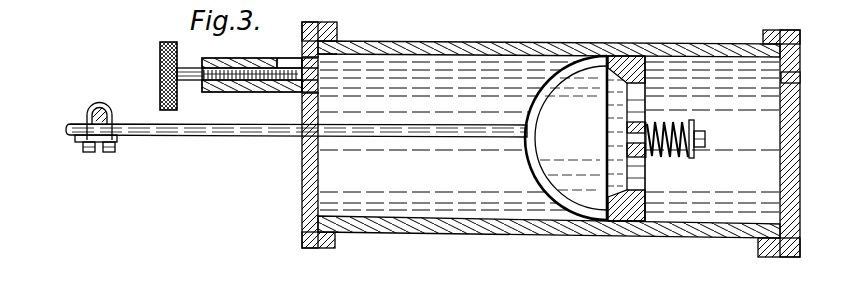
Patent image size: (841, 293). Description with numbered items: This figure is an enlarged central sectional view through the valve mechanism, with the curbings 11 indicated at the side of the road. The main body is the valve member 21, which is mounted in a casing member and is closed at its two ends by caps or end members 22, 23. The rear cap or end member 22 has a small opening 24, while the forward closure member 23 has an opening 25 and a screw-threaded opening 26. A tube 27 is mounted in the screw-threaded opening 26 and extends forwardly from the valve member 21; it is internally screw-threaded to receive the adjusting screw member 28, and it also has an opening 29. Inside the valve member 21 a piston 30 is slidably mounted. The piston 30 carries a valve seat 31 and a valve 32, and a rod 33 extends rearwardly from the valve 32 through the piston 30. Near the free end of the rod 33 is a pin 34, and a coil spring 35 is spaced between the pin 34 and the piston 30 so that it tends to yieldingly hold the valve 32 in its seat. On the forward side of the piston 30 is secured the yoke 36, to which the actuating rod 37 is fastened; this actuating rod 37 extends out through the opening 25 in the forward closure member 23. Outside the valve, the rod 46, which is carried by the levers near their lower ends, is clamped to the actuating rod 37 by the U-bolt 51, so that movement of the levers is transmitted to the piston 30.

The curbing 11 is at (96, 21).
The valve member 21 is at (400, 52).
The cap or end member 22 is at (798, 60).
The forward closure member 23 is at (303, 197).
The small opening 24 is at (800, 77).
The opening 25 is at (302, 150).
The screw-threaded opening 26 is at (322, 61).
The tube 27 is at (226, 58).
The adjusting screw member 28 is at (160, 61).
The opening 29 is at (285, 58).
The piston 30 is at (631, 61).
The valve seat 31 is at (617, 221).
The valve 32 is at (628, 127).
The rod 33 is at (705, 137).
The pin 34 is at (696, 126).
The coil spring 35 is at (687, 158).
The yoke 36 is at (535, 156).
The actuating rod 37 is at (70, 128).
The rod 46 is at (112, 112).
The U-bolt 51 is at (90, 112).